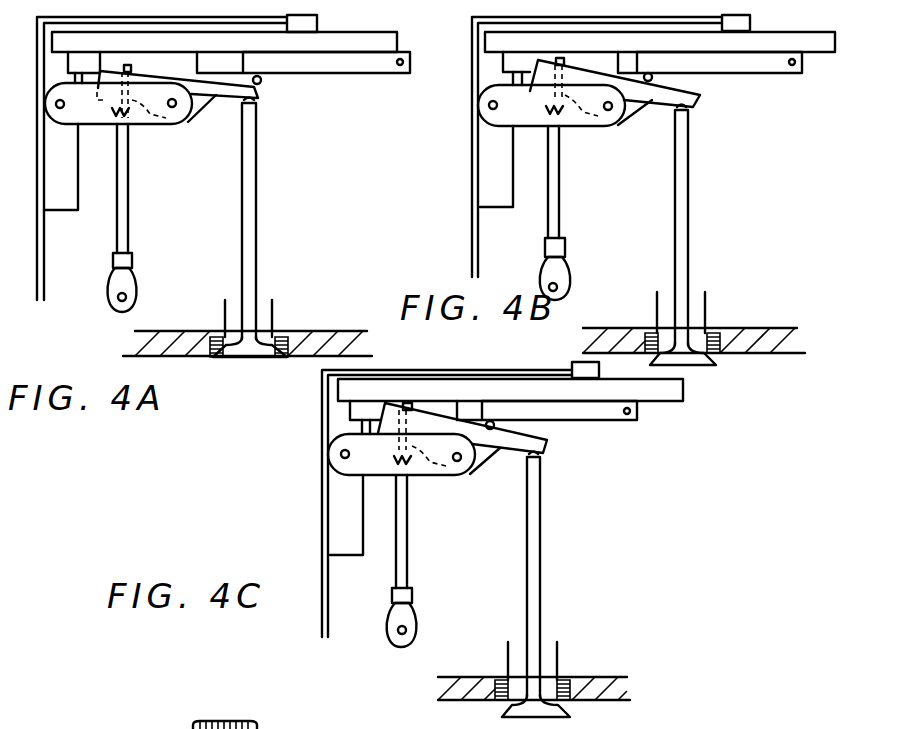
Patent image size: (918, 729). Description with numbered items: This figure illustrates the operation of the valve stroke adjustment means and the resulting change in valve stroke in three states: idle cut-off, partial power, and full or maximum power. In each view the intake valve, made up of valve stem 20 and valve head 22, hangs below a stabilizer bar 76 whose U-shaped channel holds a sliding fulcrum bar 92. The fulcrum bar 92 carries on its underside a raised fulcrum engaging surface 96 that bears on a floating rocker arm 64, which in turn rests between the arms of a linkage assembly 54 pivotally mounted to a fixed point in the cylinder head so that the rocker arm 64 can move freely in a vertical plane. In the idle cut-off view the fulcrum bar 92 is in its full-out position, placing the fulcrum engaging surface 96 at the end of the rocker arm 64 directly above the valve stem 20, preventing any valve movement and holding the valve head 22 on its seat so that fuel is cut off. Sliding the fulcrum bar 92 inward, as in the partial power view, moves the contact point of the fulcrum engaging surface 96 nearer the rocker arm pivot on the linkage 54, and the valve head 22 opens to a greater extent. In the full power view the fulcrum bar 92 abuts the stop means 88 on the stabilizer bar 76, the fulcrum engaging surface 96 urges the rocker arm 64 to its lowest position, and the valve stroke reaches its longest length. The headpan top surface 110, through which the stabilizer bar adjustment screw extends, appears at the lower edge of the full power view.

In FIG. 4A, the valve stem 20 is at (250, 173).
In FIG. 4B, the valve stem 20 is at (684, 217).
In FIG. 4A, the valve head 22 is at (255, 357).
In FIG. 4B, the valve head 22 is at (700, 366).
In FIG. 4C, the valve head 22 is at (553, 713).
In FIG. 4A, the linkage assembly 54 is at (137, 115).
In FIG. 4B, the linkage assembly 54 is at (572, 118).
In FIG. 4C, the linkage assembly 54 is at (420, 467).
In FIG. 4A, the floating rocker arm 64 is at (198, 97).
In FIG. 4B, the floating rocker arm 64 is at (633, 102).
In FIG. 4C, the floating rocker arm 64 is at (485, 455).
In FIG. 4A, the stabilizer bar 76 is at (355, 40).
In FIG. 4B, the stabilizer bar 76 is at (785, 42).
In FIG. 4C, the stabilizer bar 76 is at (667, 390).
In FIG. 4A, the stop means 88 is at (197, 67).
In FIG. 4B, the stop means 88 is at (617, 72).
In FIG. 4C, the stop means 88 is at (465, 405).
In FIG. 4A, the sliding fulcrum bar 92 is at (373, 67).
In FIG. 4B, the sliding fulcrum bar 92 is at (760, 67).
In FIG. 4C, the sliding fulcrum bar 92 is at (607, 408).
In FIG. 4A, the fulcrum engaging surface 96 is at (264, 78).
In FIG. 4B, the fulcrum engaging surface 96 is at (650, 78).
In FIG. 4C, the fulcrum engaging surface 96 is at (497, 425).
In FIG. 4C, the headpan top surface 110 is at (697, 728).